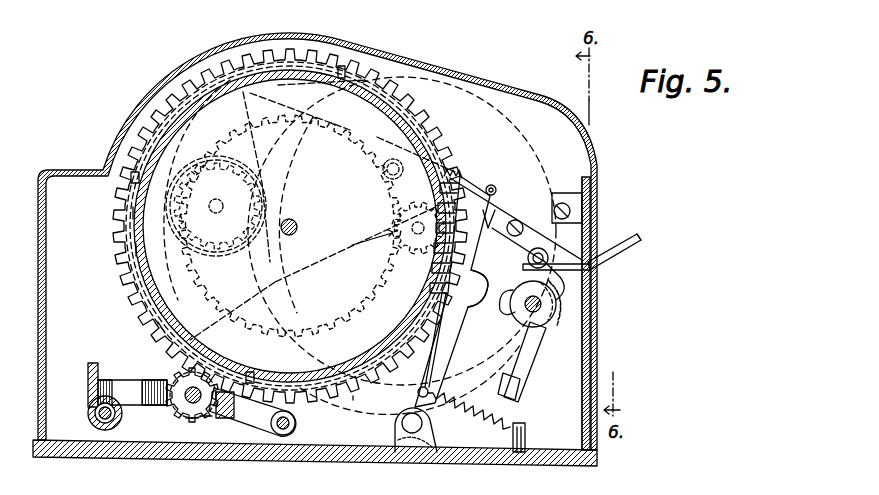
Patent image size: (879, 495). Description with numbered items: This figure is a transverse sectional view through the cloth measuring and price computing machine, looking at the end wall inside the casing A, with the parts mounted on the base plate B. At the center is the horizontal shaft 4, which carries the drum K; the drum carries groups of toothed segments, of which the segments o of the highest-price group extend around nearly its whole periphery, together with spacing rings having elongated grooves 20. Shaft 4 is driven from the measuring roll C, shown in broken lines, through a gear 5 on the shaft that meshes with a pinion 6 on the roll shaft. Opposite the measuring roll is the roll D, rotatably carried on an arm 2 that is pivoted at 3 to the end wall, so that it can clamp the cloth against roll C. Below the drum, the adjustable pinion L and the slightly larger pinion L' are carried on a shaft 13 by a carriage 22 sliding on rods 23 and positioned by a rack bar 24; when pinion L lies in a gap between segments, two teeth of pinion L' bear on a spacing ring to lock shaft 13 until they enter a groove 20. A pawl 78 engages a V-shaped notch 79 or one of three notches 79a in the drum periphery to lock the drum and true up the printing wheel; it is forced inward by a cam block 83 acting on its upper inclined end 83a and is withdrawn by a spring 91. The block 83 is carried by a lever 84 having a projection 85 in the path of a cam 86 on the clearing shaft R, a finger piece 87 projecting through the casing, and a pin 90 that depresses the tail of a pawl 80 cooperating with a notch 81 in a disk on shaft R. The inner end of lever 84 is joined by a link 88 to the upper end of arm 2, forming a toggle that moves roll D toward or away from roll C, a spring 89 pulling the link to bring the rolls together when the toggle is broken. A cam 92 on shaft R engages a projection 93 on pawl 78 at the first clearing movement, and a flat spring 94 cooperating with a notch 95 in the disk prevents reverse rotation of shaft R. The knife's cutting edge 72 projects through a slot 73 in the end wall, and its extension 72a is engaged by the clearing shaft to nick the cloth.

The casing A is at (242, 42).
The base plate B is at (368, 456).
The roll C is at (421, 68).
The roll D is at (240, 246).
The drum K is at (133, 213).
The adjustable pinion L is at (184, 453).
The pinion L' is at (203, 452).
The clearing shaft R is at (565, 315).
The toothed segments o is at (351, 404).
The arm 2 is at (172, 148).
The pivot 3 is at (160, 328).
The shaft 4 is at (289, 216).
The gear 5 is at (349, 318).
The pinion 6 is at (409, 266).
The shaft 13 is at (178, 406).
The elongated grooves 20 is at (129, 254).
The carriage 22 is at (246, 416).
The rods 23 is at (104, 432).
The rack bar 24 is at (88, 368).
The cutting edge 72 is at (588, 199).
The extension 72a is at (590, 270).
The slot 73 is at (590, 182).
The pawl 78 is at (446, 346).
The notch 79 is at (140, 292).
The notches 79a is at (343, 60).
The pawl 80 is at (532, 258).
The notch 81 is at (556, 302).
The cam block 83 is at (499, 210).
The upper inclined end 83a is at (501, 181).
The lever 84 is at (517, 221).
The projection 85 is at (592, 256).
The cam 86 is at (433, 395).
The finger piece 87 is at (631, 242).
The link 88 is at (388, 98).
The spring 89 is at (470, 163).
The pin 90 is at (536, 244).
The spring 91 is at (481, 423).
The cam 92 is at (443, 340).
The projection 93 is at (475, 300).
The flat spring 94 is at (523, 375).
The notch 95 is at (532, 335).